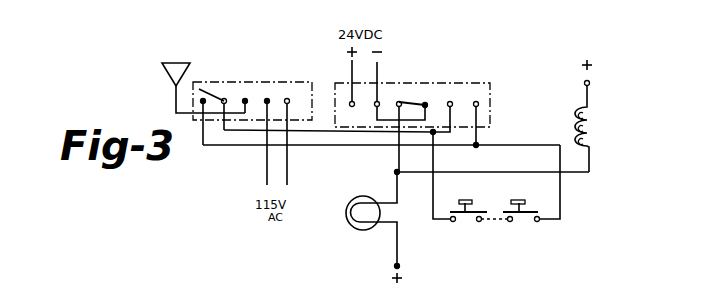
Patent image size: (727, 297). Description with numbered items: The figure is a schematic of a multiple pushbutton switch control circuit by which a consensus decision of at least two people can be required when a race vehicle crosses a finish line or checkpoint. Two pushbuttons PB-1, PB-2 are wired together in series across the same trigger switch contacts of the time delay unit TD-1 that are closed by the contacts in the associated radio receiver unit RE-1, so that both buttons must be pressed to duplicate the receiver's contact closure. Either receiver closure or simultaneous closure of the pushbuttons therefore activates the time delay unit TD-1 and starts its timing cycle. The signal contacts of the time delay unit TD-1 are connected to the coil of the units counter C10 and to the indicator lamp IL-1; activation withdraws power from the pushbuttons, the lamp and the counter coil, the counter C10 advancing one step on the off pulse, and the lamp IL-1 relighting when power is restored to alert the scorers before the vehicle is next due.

The radio receiver unit RE-1 is at (252, 118).
The time delay unit TD-1 is at (412, 117).
The indicator lamp IL-1 is at (367, 227).
The pushbutton PB-1 is at (463, 203).
The pushbutton PB-2 is at (521, 203).
The units counter C10 is at (599, 116).